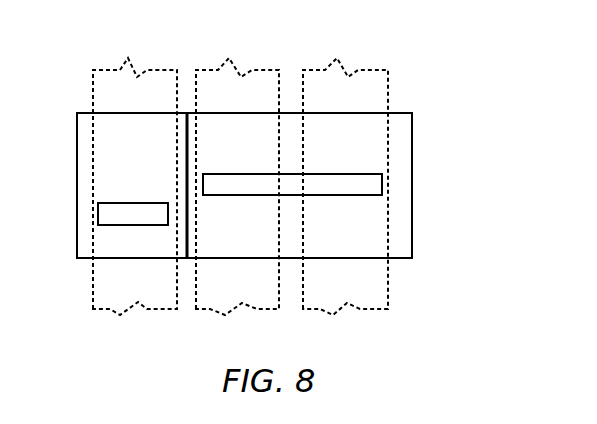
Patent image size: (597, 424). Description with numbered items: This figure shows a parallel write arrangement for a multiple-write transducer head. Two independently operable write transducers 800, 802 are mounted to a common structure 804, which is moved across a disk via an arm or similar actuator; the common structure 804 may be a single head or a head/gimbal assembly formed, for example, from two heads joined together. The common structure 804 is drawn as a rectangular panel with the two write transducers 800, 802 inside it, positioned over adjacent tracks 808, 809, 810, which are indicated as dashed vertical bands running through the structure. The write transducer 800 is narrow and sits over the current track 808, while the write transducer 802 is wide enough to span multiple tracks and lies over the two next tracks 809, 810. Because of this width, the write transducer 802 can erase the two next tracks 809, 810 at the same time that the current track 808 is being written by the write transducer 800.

The write transducer 800 is at (98, 208).
The write transducer 802 is at (382, 183).
The common structure 804 is at (412, 116).
The track 808 is at (105, 70).
The track 809 is at (214, 70).
The track 810 is at (369, 70).